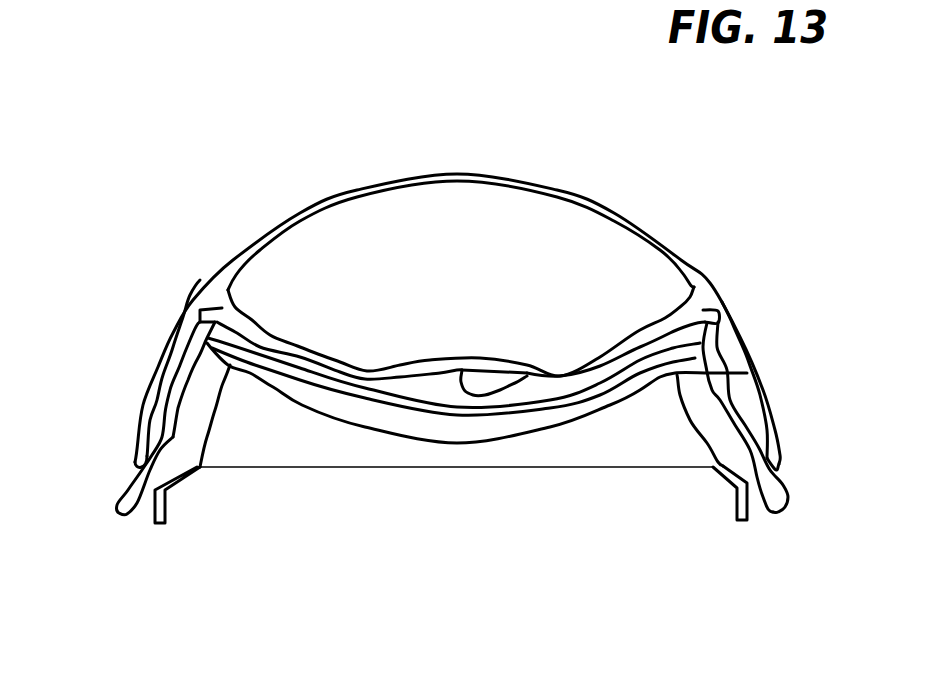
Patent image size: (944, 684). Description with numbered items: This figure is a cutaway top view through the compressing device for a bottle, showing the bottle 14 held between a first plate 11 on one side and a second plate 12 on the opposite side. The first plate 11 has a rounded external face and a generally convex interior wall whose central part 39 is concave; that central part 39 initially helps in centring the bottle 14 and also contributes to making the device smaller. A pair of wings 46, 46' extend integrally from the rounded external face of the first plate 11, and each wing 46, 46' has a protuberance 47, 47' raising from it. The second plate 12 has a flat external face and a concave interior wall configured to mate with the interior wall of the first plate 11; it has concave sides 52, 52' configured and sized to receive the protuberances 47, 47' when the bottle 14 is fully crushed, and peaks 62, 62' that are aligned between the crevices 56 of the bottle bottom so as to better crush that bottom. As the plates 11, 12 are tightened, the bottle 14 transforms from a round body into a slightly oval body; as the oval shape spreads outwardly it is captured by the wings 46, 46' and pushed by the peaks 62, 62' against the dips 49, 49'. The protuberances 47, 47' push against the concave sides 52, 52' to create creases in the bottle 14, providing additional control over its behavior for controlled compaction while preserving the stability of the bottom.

The first plate 11 is at (350, 163).
The second plate 12 is at (462, 478).
The bottle 14 is at (130, 498).
The central part 39 is at (503, 386).
The wing 46 is at (120, 434).
The wing 46' is at (797, 417).
The protuberance 47 is at (116, 368).
The protuberance 47' is at (795, 380).
The dip 49 is at (166, 258).
The dip 49' is at (738, 278).
The concave side 52 is at (93, 425).
The concave side 52' is at (814, 436).
The crevices 56 is at (262, 363).
The peak 62 is at (370, 333).
The peak 62' is at (694, 349).